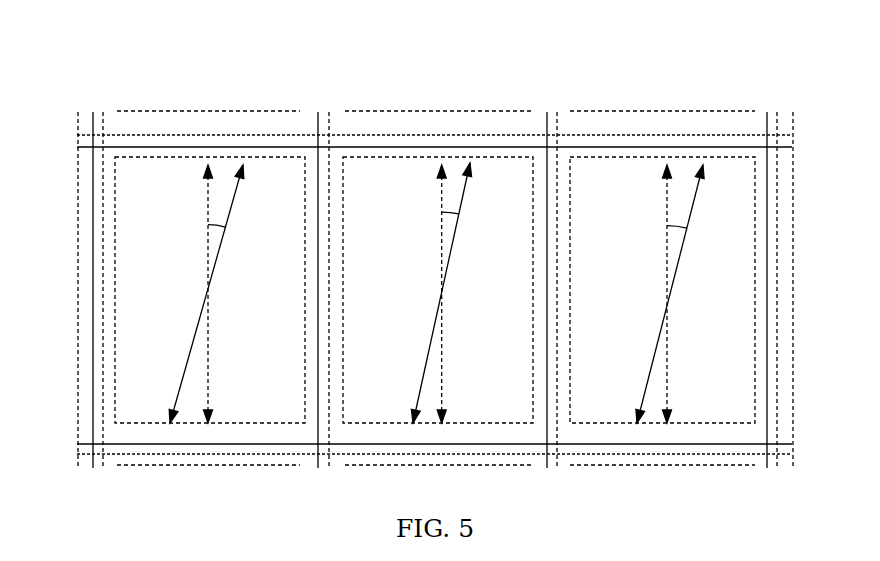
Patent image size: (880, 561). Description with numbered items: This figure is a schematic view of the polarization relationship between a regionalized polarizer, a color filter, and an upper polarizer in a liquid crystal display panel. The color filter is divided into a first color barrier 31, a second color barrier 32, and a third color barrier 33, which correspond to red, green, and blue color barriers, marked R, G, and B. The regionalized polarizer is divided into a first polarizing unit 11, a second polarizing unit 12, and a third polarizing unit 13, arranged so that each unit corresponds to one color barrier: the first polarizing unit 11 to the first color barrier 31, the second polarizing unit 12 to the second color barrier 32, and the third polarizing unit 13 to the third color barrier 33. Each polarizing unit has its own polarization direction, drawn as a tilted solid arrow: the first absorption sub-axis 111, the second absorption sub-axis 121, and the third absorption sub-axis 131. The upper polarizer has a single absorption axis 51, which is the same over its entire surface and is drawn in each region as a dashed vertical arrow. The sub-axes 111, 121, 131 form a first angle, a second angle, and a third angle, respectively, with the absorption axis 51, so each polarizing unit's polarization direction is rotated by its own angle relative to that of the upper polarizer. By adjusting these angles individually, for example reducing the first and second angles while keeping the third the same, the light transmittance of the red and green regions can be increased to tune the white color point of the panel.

The first polarizing unit 11 is at (310, 152).
The second polarizing unit 12 is at (538, 152).
The third polarizing unit 13 is at (759, 152).
The first color barrier 31 is at (170, 188).
The second color barrier 32 is at (402, 188).
The third color barrier 33 is at (628, 188).
The first absorption sub-axis 111 is at (235, 188).
The second absorption sub-axis 121 is at (465, 183).
The third absorption sub-axis 131 is at (692, 183).
The second absorption axis 51 is at (208, 250).